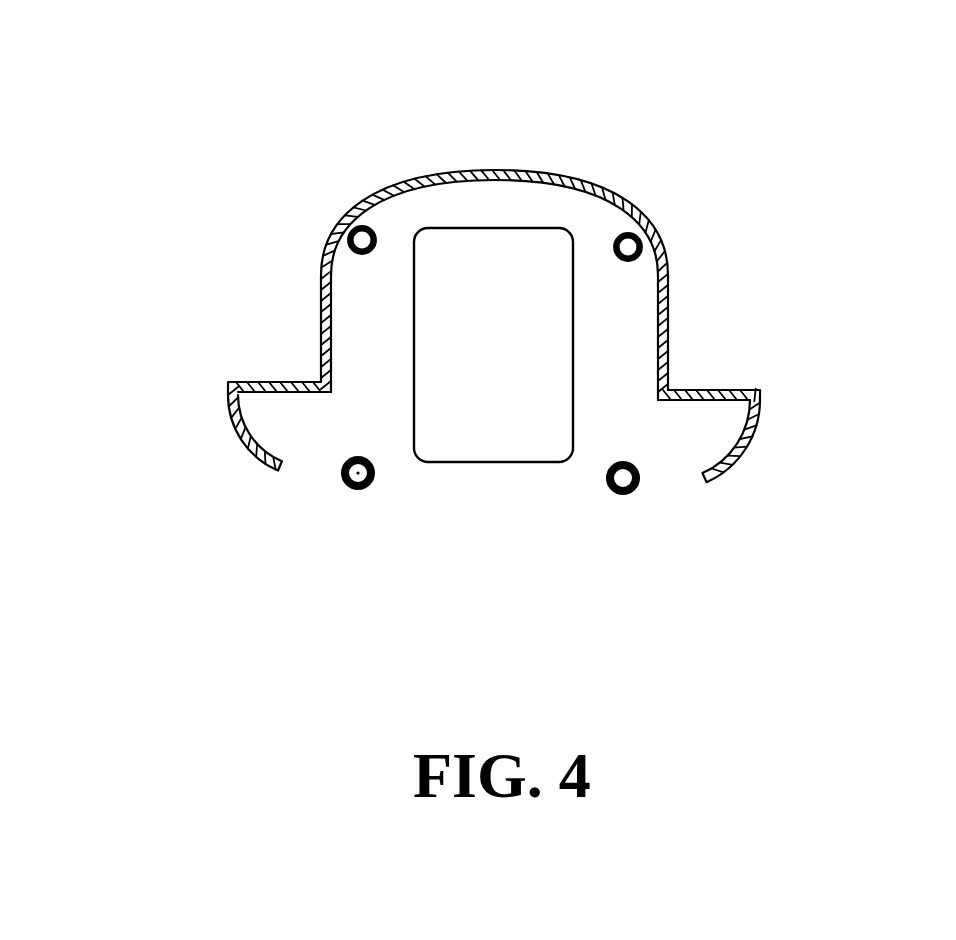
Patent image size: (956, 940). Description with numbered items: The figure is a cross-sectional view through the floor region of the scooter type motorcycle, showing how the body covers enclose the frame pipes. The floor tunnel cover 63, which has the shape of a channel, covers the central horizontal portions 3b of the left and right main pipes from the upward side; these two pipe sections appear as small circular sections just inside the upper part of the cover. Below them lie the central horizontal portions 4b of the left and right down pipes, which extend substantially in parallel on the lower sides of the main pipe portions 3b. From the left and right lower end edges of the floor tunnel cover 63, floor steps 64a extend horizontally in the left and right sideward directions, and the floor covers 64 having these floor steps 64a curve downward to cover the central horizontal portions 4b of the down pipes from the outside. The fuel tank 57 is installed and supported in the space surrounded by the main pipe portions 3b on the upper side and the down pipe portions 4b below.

The floor tunnel cover 63 is at (507, 166).
The floor steps 64a is at (271, 382).
The floor covers 64 is at (231, 418).
The fuel tank 57 is at (492, 462).
The central parallel portions of main pipes 3b is at (377, 241).
The central horizontal portions of down pipes 4b is at (357, 491).